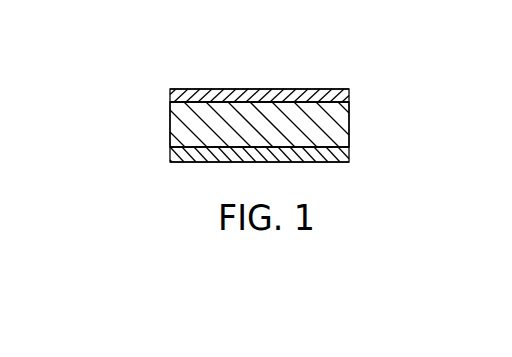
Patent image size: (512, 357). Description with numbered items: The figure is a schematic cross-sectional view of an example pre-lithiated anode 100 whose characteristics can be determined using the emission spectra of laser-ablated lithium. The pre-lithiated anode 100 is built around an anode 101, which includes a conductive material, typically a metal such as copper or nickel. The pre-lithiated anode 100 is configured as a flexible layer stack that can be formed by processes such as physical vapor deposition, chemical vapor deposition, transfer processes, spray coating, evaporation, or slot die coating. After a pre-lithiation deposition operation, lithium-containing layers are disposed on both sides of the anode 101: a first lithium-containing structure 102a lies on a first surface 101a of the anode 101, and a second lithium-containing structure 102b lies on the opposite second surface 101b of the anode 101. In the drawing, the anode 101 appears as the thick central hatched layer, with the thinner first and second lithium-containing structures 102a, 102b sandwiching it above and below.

The pre-lithiated anode 100 is at (156, 54).
The first lithium-containing structure 102a is at (350, 91).
The first surface 101a is at (349, 103).
The anode 101 is at (349, 122).
The second surface 101b is at (349, 156).
The second lithium-containing structure 102b is at (349, 158).